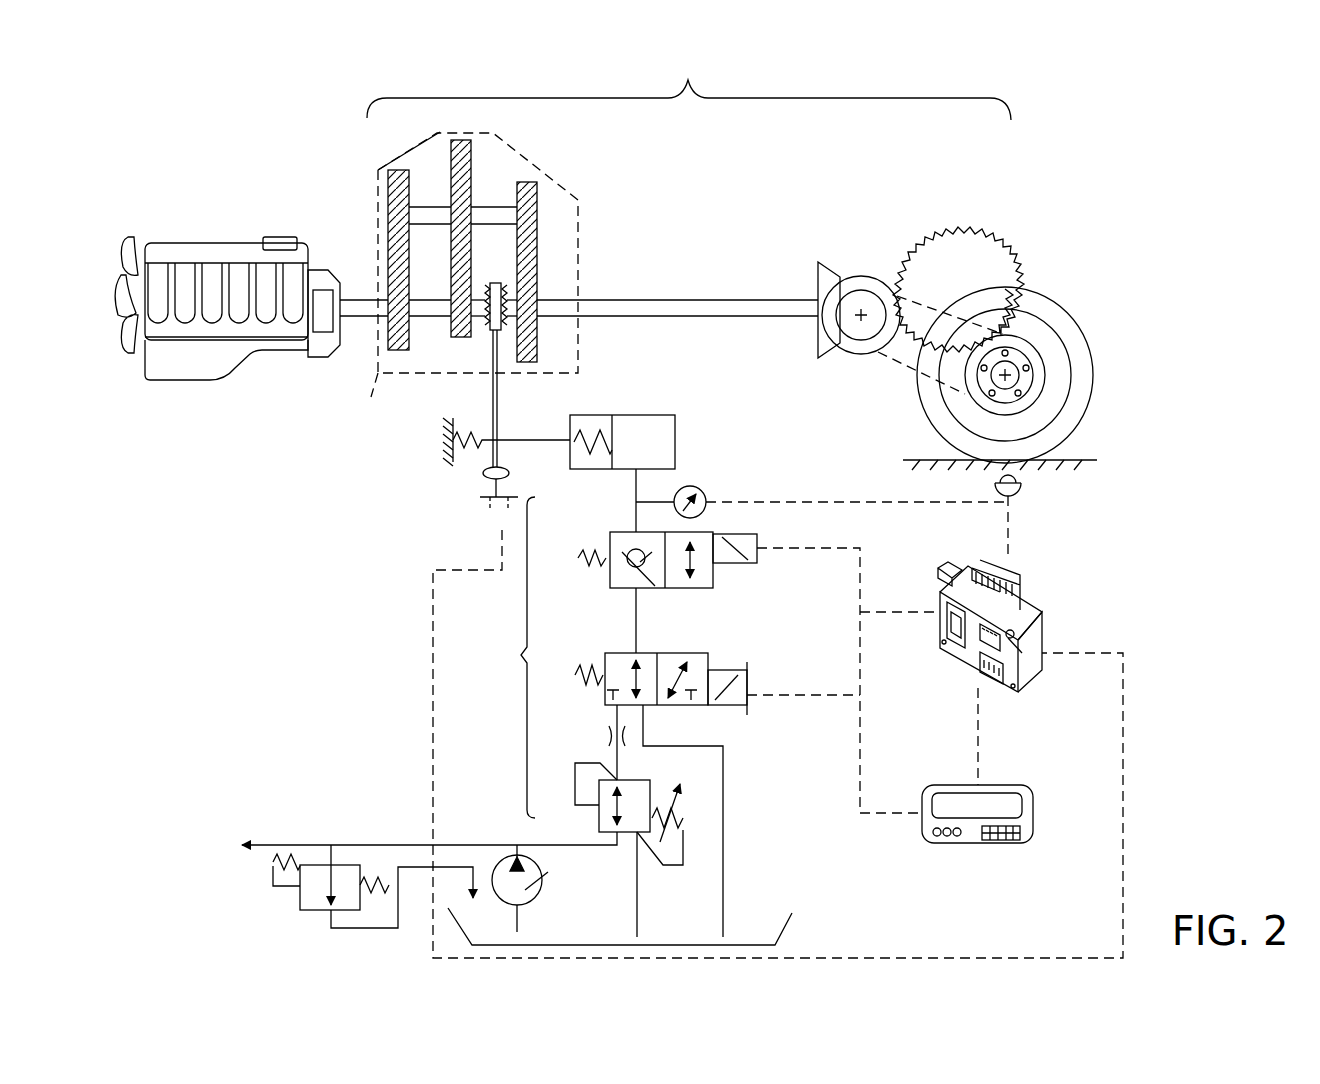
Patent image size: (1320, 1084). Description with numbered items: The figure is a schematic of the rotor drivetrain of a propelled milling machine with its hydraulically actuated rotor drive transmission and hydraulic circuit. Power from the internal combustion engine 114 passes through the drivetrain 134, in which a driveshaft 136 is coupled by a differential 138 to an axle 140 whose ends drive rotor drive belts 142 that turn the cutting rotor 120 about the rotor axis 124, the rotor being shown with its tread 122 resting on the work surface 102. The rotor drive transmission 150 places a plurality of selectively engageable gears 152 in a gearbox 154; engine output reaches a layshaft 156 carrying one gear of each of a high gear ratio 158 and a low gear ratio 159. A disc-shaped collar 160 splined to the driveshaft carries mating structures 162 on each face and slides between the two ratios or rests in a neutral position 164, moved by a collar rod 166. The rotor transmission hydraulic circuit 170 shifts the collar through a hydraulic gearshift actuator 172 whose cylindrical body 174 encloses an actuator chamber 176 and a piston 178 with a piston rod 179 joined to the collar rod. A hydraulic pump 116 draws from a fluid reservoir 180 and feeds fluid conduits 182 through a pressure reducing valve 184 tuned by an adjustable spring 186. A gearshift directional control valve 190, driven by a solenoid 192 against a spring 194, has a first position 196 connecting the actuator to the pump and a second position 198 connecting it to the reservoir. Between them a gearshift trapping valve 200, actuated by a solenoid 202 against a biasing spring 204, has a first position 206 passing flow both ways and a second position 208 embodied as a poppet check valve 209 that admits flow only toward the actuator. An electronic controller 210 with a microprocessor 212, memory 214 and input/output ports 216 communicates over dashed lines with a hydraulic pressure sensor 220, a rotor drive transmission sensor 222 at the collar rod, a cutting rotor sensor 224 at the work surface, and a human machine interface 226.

The work surface 102 is at (912, 458).
The internal combustion engine 114 is at (180, 250).
The hydraulic pump 116 is at (541, 882).
The cutting rotor 120 is at (1038, 345).
The tire tread 122 is at (1090, 372).
The rotor axis 124 is at (1015, 372).
The drivetrain 134 is at (689, 82).
The driveshaft 136 is at (716, 300).
The differential 138 is at (830, 265).
The axle 140 is at (866, 296).
The rotor drive belts 142 is at (925, 293).
The rotor drive transmission 150 is at (340, 172).
The selectively engageable gears 152 is at (407, 152).
The gearbox 154 is at (377, 380).
The layshaft 156 is at (530, 195).
The high gear ratio 158 is at (482, 170).
The low gear ratio 159 is at (545, 240).
The collar 160 is at (488, 335).
The mating structures 162 is at (540, 330).
The neutral position 164 is at (484, 273).
The collar rod 166 is at (498, 388).
The rotor transmission hydraulic circuit 170 is at (507, 657).
The hydraulic gearshift actuator 172 is at (661, 438).
The cylindrical body 174 is at (646, 413).
The actuator chamber 176 is at (648, 447).
The piston 178 is at (613, 469).
The piston rod 179 is at (532, 500).
The fluid reservoir 180 is at (793, 926).
The fluid conduits 182 is at (560, 845).
The pressure reducing valve 184 is at (672, 785).
The adjustable spring 186 is at (682, 818).
The gearshift directional control valve 190 is at (680, 664).
The solenoid 192 is at (750, 690).
The spring 194 is at (585, 690).
The first position 196 is at (675, 655).
The second position 198 is at (605, 660).
The gearshift trapping valve 200 is at (710, 544).
The solenoid 202 is at (758, 542).
The biasing spring 204 is at (590, 565).
The first position 206 is at (700, 540).
The second position 208 is at (636, 590).
The poppet check valve 209 is at (649, 590).
The electronic controller 210 is at (1008, 647).
The microprocessor 212 is at (957, 650).
The memory 214 is at (1025, 665).
The input/output ports 216 is at (995, 690).
The hydraulic pressure sensor 220 is at (698, 490).
The rotor drive transmission sensor 222 is at (488, 497).
The cutting rotor sensor 224 is at (1022, 487).
The human machine interface 226 is at (1035, 812).